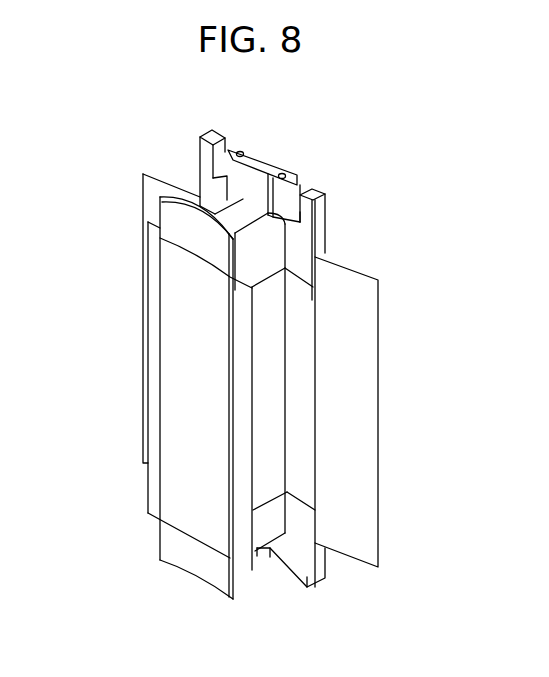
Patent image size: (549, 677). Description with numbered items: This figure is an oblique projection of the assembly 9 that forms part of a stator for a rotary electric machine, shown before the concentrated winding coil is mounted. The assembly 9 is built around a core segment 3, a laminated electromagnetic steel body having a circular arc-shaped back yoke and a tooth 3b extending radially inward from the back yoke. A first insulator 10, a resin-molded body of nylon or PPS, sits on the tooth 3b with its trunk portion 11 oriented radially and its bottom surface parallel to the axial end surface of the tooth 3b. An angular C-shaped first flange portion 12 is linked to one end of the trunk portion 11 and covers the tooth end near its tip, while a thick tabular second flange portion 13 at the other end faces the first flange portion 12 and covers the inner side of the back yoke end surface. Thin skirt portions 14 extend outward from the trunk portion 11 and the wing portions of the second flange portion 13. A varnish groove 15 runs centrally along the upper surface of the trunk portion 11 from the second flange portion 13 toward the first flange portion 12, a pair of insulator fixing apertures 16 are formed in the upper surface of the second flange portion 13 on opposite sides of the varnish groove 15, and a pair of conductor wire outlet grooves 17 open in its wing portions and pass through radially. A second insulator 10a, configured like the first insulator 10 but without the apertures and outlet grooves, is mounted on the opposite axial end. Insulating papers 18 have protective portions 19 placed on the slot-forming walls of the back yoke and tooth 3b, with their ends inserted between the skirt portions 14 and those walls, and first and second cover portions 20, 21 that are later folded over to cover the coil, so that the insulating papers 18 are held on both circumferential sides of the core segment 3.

The core segment 3 is at (183, 320).
The tooth 3b is at (172, 357).
The assembly 9 is at (64, 81).
The first insulator 10 is at (331, 185).
The second insulator 10a is at (328, 576).
The trunk portion 11 is at (237, 215).
The first flange portion 12 is at (177, 227).
The second flange portion 13 is at (318, 212).
The skirt portion 14 is at (270, 256).
The varnish groove 15 is at (212, 208).
The insulator fixing aperture 16 is at (243, 150).
The conductor wire outlet groove 17 is at (233, 148).
The insulating paper 18 is at (140, 260).
The protective portion 19 is at (272, 400).
The first cover portion 20 is at (248, 448).
The second cover portion 21 is at (368, 472).